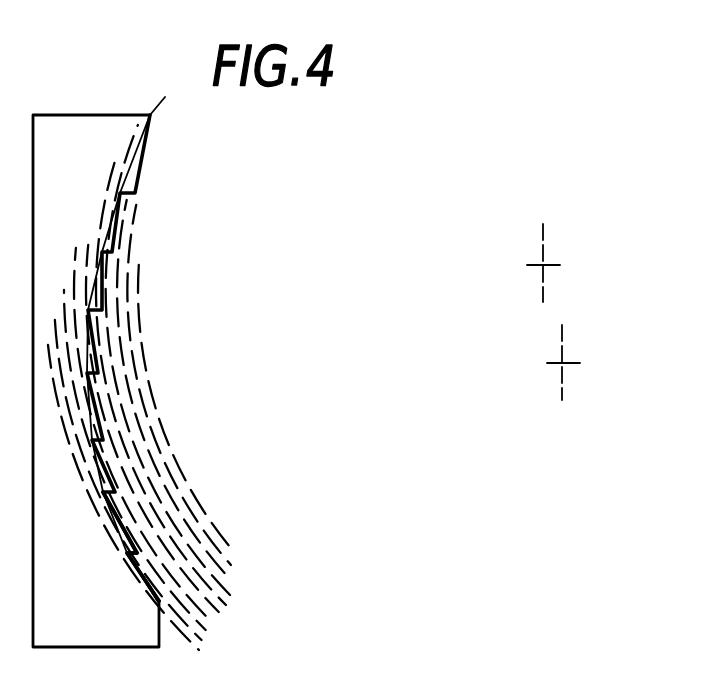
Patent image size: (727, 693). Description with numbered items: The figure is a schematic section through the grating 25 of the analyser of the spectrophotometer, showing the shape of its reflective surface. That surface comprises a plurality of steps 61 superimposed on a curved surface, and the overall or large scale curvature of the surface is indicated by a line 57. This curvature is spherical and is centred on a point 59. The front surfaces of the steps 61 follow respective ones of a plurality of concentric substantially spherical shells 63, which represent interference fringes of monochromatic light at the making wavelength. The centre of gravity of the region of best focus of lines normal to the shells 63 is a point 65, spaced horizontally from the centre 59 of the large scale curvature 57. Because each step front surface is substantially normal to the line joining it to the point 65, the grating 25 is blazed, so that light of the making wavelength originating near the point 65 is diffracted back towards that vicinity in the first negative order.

The grating 25 is at (82, 137).
The line showing large scale curvature 57 is at (110, 536).
The centre of large scale curvature 59 is at (564, 361).
The steps 61 is at (115, 239).
The concentric substantially spherical shells 63 is at (173, 462).
The centre of gravity of region of best focus 65 is at (546, 262).